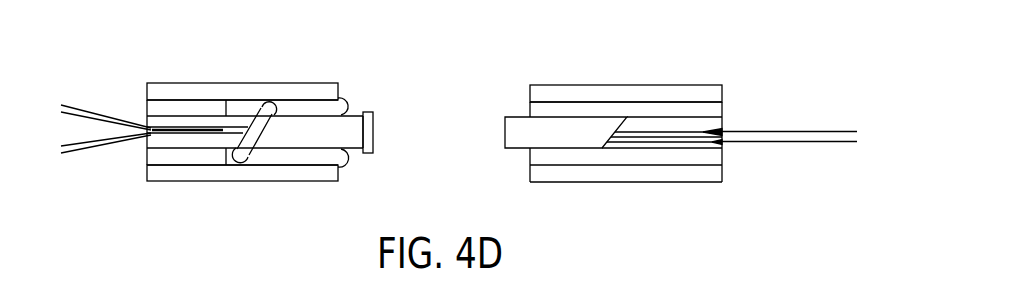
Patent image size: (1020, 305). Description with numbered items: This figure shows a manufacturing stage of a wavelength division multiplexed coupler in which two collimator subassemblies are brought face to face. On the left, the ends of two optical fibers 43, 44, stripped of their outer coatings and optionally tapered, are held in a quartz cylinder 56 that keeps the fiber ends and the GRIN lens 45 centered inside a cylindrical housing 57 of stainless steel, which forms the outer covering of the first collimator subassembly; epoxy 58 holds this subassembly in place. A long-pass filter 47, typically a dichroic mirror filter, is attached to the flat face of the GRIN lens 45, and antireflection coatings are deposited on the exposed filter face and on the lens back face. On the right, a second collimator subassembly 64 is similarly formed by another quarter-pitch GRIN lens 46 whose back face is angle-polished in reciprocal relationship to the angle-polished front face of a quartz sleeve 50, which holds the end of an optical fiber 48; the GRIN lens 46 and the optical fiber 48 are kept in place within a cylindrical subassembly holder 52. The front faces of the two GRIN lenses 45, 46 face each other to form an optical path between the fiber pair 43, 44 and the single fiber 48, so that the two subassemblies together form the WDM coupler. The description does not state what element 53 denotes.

The optical fiber 43 is at (75, 105).
The optical fiber 44 is at (72, 156).
The GRIN lens 45 is at (353, 142).
The quarter-pitch GRIN lens 46 is at (517, 143).
The long-pass filter 47 is at (372, 132).
The optical fiber 48 is at (788, 137).
The quartz sleeve 50 is at (167, 198).
The cylindrical subassembly holder 52 is at (670, 93).
The fiber end 53 is at (720, 147).
The quartz cylinder 56 is at (152, 108).
The cylindrical housing 57 is at (222, 92).
The epoxy 58 is at (347, 103).
The second collimator subassembly 64 is at (637, 60).